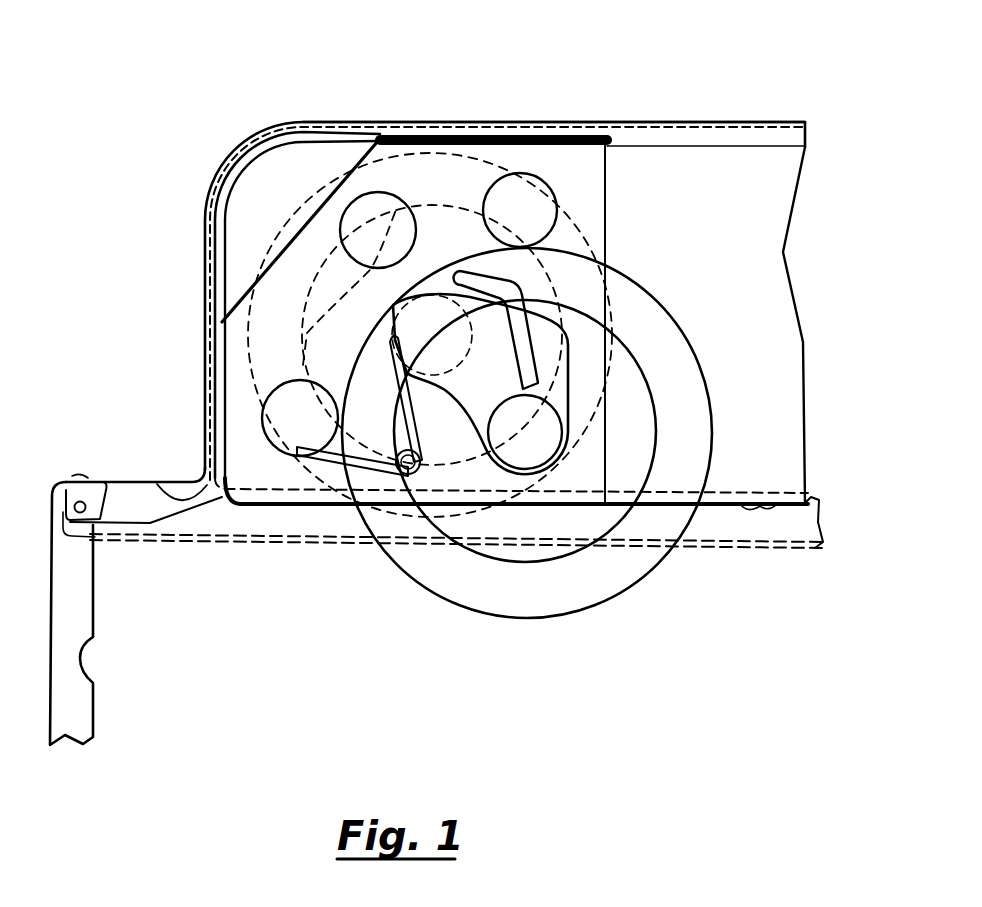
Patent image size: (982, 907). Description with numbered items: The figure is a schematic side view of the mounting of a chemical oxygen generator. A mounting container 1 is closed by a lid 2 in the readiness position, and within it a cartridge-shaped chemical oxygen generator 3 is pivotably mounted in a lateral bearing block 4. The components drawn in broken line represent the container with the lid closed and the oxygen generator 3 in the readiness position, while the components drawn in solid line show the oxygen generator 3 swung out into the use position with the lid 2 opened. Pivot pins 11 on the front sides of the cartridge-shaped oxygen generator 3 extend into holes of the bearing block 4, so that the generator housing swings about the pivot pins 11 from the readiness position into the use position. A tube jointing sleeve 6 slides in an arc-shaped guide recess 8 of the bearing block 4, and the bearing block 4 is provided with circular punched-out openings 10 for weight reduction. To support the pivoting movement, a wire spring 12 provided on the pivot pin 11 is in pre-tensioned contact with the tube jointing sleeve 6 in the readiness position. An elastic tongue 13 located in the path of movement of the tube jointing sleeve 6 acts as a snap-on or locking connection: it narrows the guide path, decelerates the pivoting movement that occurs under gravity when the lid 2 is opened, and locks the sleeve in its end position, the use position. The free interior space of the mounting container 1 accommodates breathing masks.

The mounting container 1 is at (673, 127).
The lid 2 is at (73, 607).
The cartridge-shaped chemical oxygen generator 3 is at (252, 294).
The bearing block 4 is at (588, 172).
The tube jointing sleeve 6 is at (265, 364).
The arc-shaped guide recess 8 is at (462, 397).
The circular punched-out opening 10 is at (380, 207).
The pivot pin 11 is at (408, 478).
The wire spring 12 is at (397, 380).
The elastic tongue 13 is at (470, 406).